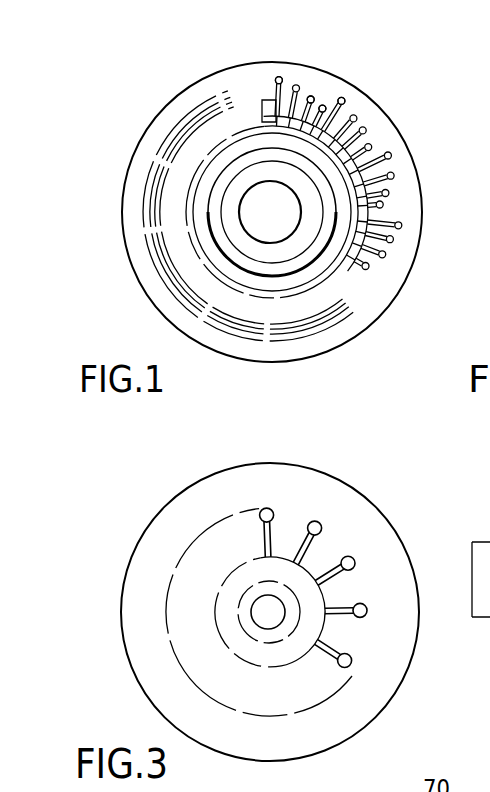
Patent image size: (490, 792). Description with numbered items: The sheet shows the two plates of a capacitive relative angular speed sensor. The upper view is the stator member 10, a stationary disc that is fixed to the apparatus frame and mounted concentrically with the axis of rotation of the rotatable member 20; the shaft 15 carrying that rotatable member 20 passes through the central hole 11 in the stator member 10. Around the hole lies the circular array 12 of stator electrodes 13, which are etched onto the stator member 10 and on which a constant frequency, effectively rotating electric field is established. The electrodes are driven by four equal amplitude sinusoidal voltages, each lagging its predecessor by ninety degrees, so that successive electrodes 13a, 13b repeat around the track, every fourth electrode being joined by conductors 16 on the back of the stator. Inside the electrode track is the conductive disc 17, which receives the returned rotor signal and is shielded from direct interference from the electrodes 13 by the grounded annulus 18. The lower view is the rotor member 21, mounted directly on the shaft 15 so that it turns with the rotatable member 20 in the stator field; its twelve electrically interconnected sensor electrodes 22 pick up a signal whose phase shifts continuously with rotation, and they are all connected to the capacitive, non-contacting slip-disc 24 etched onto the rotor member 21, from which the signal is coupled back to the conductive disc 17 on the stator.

In FIG. 1, the stator member 10 is at (184, 90).
In FIG. 1, the hole 11 is at (252, 186).
In FIG. 1, the circular array of stator electrodes 12 is at (338, 200).
In FIG. 1, the stator electrode 13 is at (368, 173).
In FIG. 1, the stator electrode of first series 13a is at (297, 110).
In FIG. 1, the stator electrode of second series 13b is at (325, 128).
In FIG. 1, the conductors 16 is at (489, 136).
In FIG. 1, the conductive disc 17 is at (290, 250).
In FIG. 1, the grounded annulus 18 is at (320, 262).
In FIG. 3, the shaft 15 is at (284, 614).
In FIG. 3, the rotatable member 20 is at (290, 458).
In FIG. 3, the rotor member 21 is at (345, 513).
In FIG. 3, the sensor electrodes 22 is at (354, 558).
In FIG. 3, the slip-disc 24 is at (290, 648).